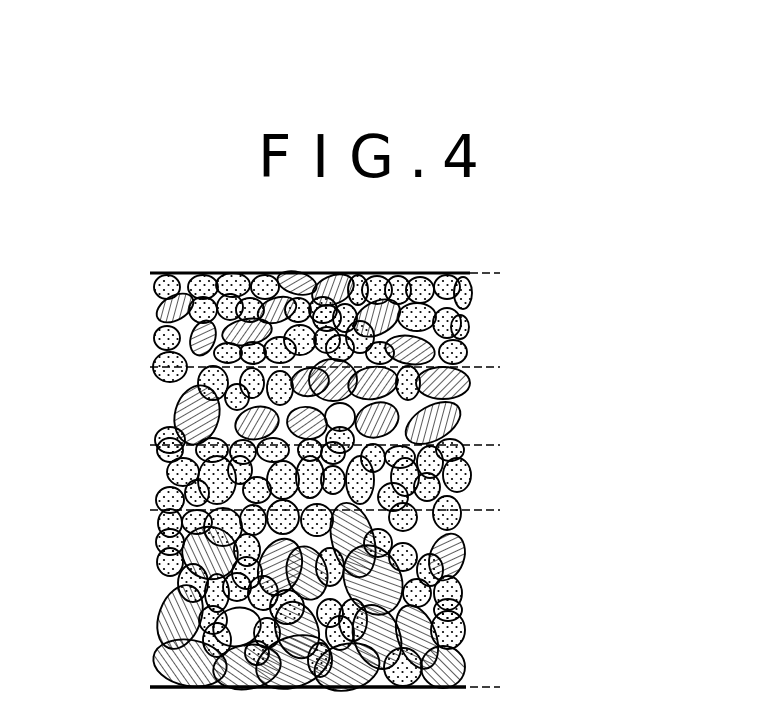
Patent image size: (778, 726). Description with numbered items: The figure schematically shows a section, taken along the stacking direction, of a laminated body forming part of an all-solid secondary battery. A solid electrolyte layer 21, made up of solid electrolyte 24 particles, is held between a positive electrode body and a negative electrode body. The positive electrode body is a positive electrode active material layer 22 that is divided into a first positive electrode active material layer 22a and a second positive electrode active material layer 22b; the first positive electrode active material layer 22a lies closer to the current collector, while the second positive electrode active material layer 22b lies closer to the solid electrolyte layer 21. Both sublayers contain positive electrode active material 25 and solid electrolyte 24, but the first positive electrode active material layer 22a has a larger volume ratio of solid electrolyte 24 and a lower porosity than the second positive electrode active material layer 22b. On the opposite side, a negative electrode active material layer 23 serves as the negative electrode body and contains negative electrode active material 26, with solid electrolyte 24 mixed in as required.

The solid electrolyte layer 21 is at (314, 475).
The positive electrode active material layer 22 is at (362, 360).
The first positive electrode active material layer 22a is at (321, 317).
The second positive electrode active material layer 22b is at (366, 402).
The negative electrode active material layer 23 is at (313, 597).
The solid electrolyte 24 is at (166, 478).
The positive electrode active material 25 is at (162, 322).
The negative electrode active material 26 is at (168, 618).